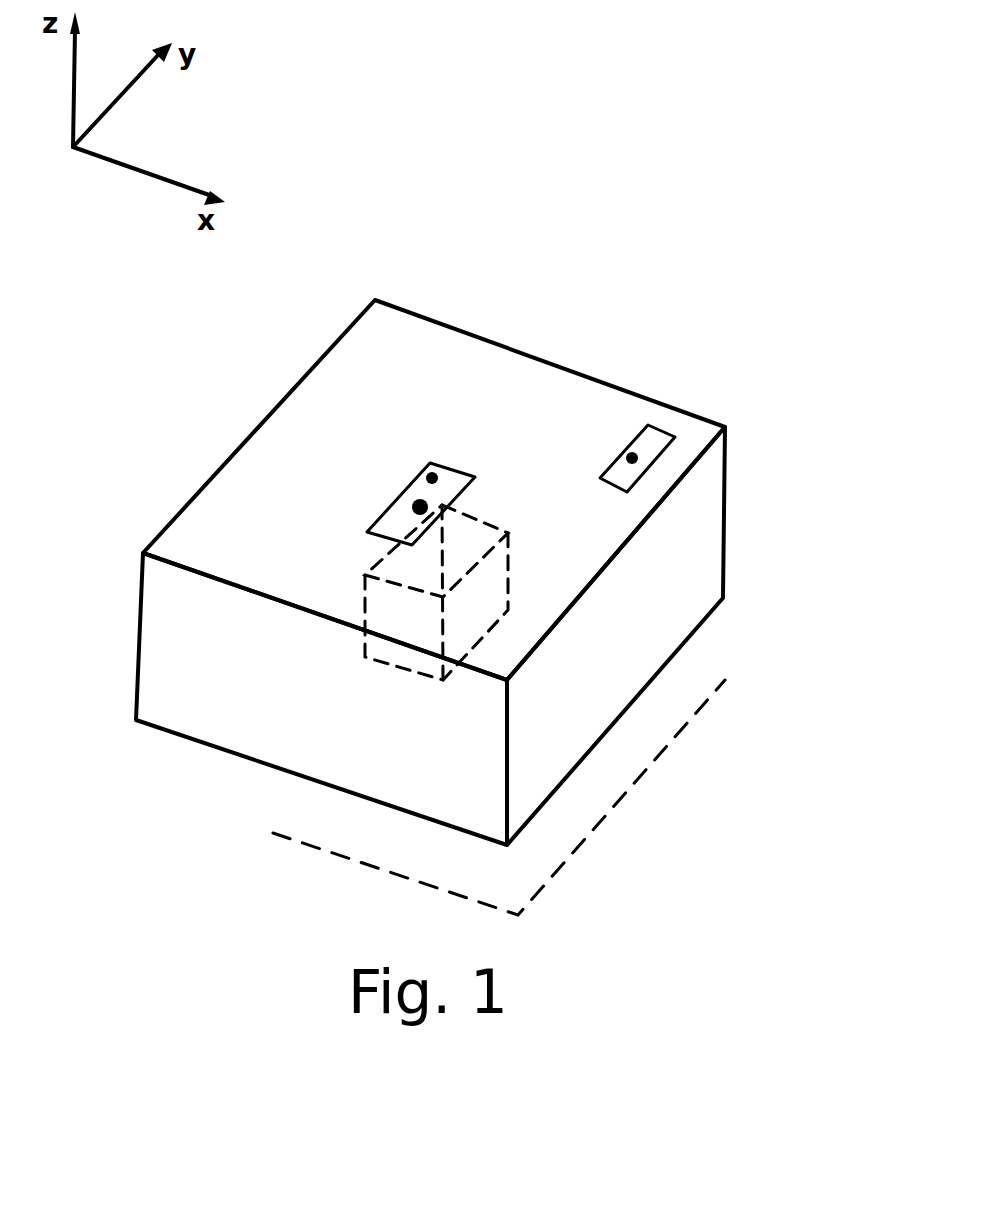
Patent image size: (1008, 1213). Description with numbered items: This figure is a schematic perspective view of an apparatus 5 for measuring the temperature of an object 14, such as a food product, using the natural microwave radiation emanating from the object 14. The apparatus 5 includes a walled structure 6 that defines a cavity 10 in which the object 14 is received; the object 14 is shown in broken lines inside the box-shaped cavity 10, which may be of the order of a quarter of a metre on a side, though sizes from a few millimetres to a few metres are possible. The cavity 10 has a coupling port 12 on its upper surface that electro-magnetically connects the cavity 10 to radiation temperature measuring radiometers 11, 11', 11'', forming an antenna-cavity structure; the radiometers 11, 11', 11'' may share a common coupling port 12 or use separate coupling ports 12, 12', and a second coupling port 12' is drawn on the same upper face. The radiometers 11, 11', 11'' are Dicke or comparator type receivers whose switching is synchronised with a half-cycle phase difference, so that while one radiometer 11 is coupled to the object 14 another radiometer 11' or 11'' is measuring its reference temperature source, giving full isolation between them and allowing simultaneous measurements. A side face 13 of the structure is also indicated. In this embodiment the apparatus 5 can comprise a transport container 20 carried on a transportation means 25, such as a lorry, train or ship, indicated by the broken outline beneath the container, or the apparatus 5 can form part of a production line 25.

The apparatus 5 is at (722, 402).
The walled structure 6 is at (314, 722).
The cavity 10 is at (748, 481).
The radiation temperature measuring radiometer 11 is at (361, 492).
The radiometer 11' is at (610, 425).
The radiometer 11'' is at (411, 428).
The coupling port 12 is at (426, 476).
The coupling port 12' is at (650, 417).
The side face 13 is at (689, 636).
The object 14 is at (510, 565).
The transport container 20 is at (700, 583).
The transportation means 25 is at (588, 838).